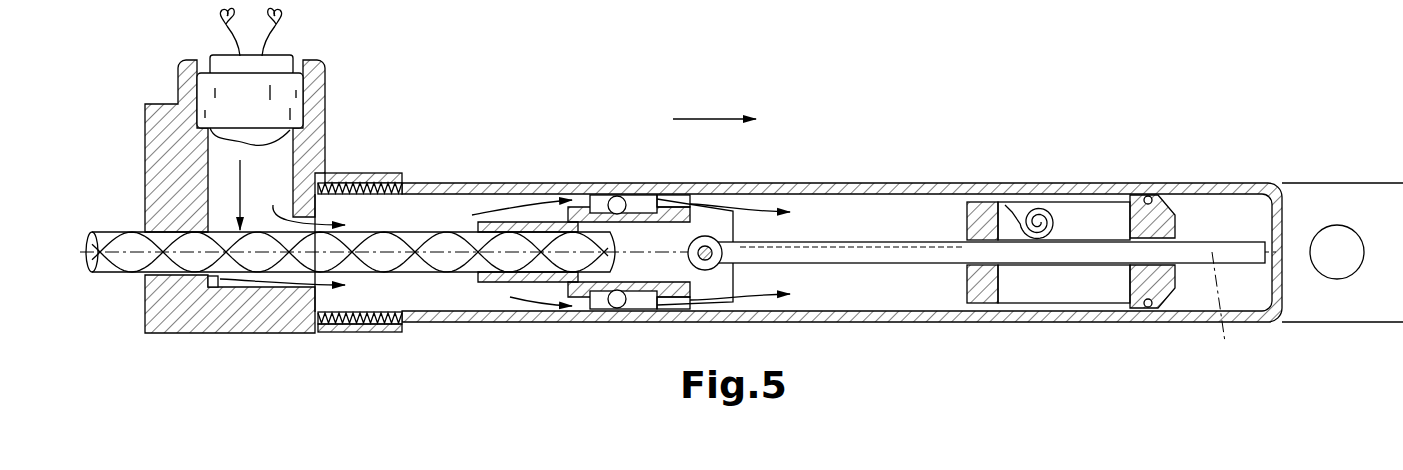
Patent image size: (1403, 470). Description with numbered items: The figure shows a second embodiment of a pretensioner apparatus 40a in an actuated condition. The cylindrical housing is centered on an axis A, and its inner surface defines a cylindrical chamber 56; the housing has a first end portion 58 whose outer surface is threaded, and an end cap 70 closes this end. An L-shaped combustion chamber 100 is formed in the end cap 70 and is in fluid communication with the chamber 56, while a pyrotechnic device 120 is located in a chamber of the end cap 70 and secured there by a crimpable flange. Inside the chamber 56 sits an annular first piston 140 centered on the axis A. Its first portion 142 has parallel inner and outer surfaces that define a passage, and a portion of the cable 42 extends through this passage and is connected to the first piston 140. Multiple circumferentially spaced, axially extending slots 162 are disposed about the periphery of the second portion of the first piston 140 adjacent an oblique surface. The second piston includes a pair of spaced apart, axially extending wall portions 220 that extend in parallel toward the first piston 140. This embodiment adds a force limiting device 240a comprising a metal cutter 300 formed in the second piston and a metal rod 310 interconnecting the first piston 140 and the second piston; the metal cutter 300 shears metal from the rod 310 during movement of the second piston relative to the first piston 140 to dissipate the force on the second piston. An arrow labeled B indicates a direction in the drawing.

The pretensioner apparatus 40a is at (472, 148).
The cable 42 is at (108, 264).
The cylindrical chamber 56 is at (420, 224).
The first end portion 58 is at (347, 332).
The end cap 70 is at (328, 121).
The L-shaped combustion chamber 100 is at (223, 282).
The pyrotechnic device 120 is at (272, 53).
The first piston 140 is at (523, 221).
The first portion 142 is at (493, 284).
The slots 162 is at (584, 298).
The wall portions 220 is at (1178, 221).
The force limiting device 240a is at (1068, 221).
The metal cutter 300 is at (965, 228).
The metal rod 310 is at (812, 259).
The axis A is at (1224, 311).
The direction B is at (714, 105).